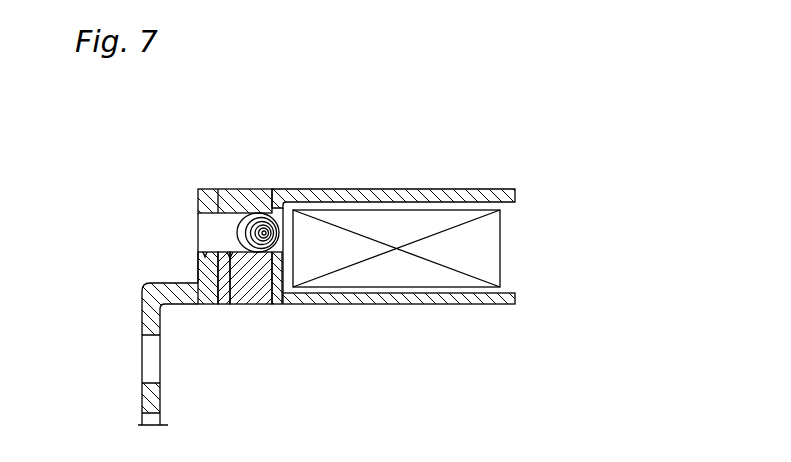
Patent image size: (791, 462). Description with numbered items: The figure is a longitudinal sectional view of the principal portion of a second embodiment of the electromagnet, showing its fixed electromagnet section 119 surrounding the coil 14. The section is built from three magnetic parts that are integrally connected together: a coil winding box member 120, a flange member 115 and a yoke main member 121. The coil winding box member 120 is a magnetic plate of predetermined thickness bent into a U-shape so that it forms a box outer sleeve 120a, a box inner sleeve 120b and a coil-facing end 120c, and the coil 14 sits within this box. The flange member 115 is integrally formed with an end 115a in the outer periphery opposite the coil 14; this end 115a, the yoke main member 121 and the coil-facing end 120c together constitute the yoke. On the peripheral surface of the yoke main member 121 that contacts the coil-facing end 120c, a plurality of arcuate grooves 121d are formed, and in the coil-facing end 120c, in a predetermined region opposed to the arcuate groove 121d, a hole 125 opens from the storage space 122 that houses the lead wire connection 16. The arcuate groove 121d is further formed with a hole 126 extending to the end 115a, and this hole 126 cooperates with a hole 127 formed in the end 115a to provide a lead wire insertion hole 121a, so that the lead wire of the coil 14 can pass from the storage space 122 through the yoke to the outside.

The fixed electromagnet section 119 is at (143, 109).
The flange member 115 is at (142, 313).
The end 115a is at (198, 272).
The yoke main member 121 is at (230, 189).
The lead wire insertion hole 121a is at (240, 379).
The arcuate groove 121d is at (242, 253).
The hole 127 is at (201, 253).
The hole 126 is at (230, 253).
The hole 125 is at (277, 253).
The storage space 122 is at (322, 379).
The coil winding box member 120 is at (327, 189).
The box outer sleeve 120a is at (427, 191).
The box inner sleeve 120b is at (438, 306).
The coil-facing end 120c is at (283, 267).
The lead wire connection 16 is at (277, 229).
The coil 14 is at (473, 215).